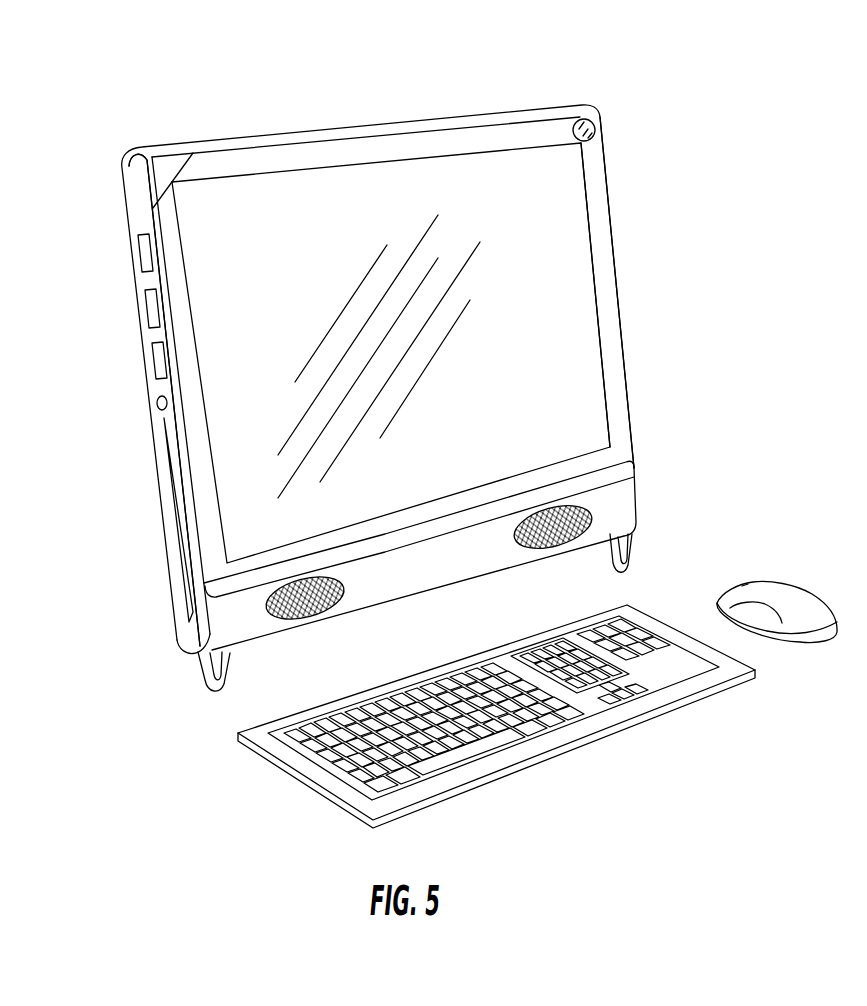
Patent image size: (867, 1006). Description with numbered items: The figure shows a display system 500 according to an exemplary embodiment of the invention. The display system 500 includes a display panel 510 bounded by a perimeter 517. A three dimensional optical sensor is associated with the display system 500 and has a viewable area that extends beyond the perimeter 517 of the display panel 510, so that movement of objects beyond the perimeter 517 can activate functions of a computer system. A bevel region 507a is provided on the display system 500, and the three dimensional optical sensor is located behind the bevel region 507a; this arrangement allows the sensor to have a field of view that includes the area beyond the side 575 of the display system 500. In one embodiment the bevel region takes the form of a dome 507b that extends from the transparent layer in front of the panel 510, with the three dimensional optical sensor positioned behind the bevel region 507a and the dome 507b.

The display system 500 is at (216, 98).
The display panel 510 is at (529, 195).
The bevel region 507a is at (163, 173).
The dome 507b is at (597, 128).
The perimeter 517 is at (597, 292).
The side 575 is at (623, 368).